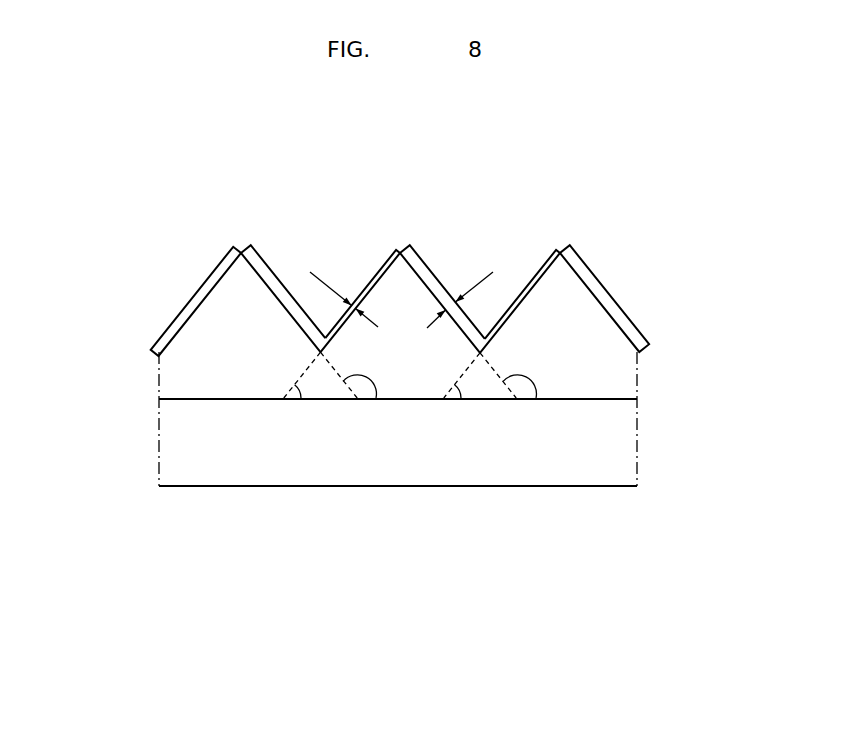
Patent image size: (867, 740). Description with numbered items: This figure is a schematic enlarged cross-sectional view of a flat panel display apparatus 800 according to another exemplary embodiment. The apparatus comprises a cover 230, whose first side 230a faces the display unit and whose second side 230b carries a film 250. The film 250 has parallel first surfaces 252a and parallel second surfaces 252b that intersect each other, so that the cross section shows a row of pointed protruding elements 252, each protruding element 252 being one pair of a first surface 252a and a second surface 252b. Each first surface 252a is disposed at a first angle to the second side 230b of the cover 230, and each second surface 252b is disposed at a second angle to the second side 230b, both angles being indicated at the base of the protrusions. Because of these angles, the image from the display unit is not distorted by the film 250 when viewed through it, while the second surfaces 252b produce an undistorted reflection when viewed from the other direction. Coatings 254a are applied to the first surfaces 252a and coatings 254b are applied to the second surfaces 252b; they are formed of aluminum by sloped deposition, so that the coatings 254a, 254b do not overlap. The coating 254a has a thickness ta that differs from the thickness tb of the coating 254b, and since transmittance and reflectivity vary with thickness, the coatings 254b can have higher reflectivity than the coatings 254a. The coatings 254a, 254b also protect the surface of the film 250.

The flat panel display apparatus 800 is at (505, 601).
The cover 230 is at (398, 442).
The first side of the cover 230a is at (205, 486).
The second side of the cover 230b is at (207, 399).
The film 250 is at (438, 283).
The protruding element 252 is at (239, 260).
The first surface 252a is at (207, 288).
The second surface 252b is at (272, 288).
The coating 254a is at (528, 278).
The coating 254b is at (595, 287).